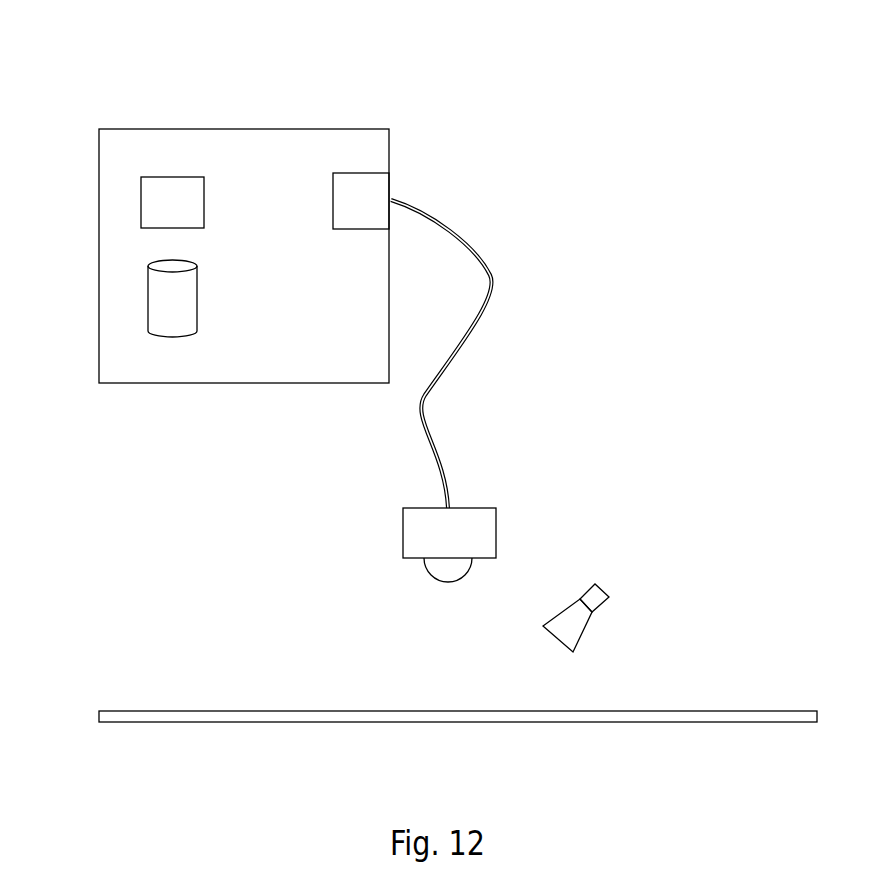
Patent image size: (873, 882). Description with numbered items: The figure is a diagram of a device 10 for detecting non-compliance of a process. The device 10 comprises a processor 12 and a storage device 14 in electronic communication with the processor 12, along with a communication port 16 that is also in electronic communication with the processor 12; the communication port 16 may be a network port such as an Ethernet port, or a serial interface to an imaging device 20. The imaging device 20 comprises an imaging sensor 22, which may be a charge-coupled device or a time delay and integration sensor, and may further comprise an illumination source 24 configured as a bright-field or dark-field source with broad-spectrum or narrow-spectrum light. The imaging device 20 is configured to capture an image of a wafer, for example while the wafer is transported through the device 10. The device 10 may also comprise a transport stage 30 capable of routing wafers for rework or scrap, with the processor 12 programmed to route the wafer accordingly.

The device 10 is at (96, 57).
The processor 12 is at (183, 211).
The storage device 14 is at (183, 311).
The communication port 16 is at (374, 211).
The imaging device 20 is at (359, 461).
The imaging sensor 22 is at (461, 546).
The illumination source 24 is at (588, 626).
The transport stage 30 is at (677, 722).